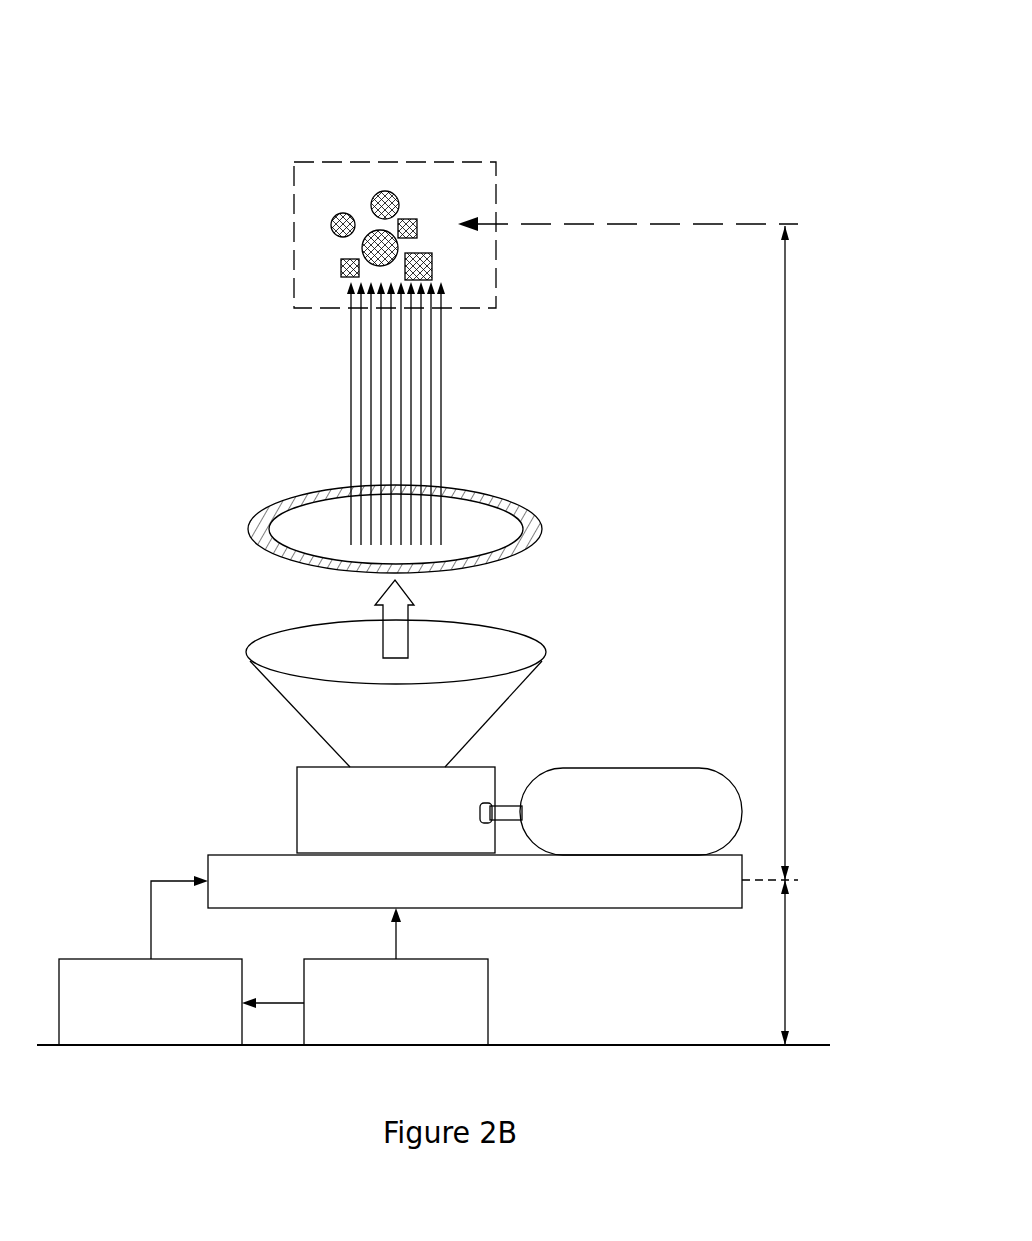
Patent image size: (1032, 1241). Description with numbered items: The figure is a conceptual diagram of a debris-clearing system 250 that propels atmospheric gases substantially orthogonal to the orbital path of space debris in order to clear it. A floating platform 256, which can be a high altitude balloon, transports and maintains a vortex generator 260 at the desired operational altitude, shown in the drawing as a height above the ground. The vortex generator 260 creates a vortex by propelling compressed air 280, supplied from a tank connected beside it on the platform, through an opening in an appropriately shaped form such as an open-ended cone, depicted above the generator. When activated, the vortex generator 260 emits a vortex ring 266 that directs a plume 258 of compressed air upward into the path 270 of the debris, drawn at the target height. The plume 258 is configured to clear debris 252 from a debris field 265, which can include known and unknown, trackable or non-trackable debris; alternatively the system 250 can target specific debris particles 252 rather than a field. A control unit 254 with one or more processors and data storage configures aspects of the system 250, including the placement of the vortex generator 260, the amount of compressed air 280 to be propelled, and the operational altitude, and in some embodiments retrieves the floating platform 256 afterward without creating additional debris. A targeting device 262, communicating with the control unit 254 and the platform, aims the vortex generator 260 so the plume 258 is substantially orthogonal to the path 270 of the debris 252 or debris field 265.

The debris-clearing system 250 is at (748, 70).
The debris 252 is at (388, 187).
The control unit 254 is at (408, 1045).
The floating platform 256 is at (655, 905).
The plume 258 is at (325, 387).
The vortex generator 260 is at (263, 670).
The targeting device 262 is at (163, 1045).
The debris field 265 is at (488, 165).
The vortex ring 266 is at (262, 545).
The path of the debris 270 is at (612, 224).
The compressed air 280 is at (655, 770).